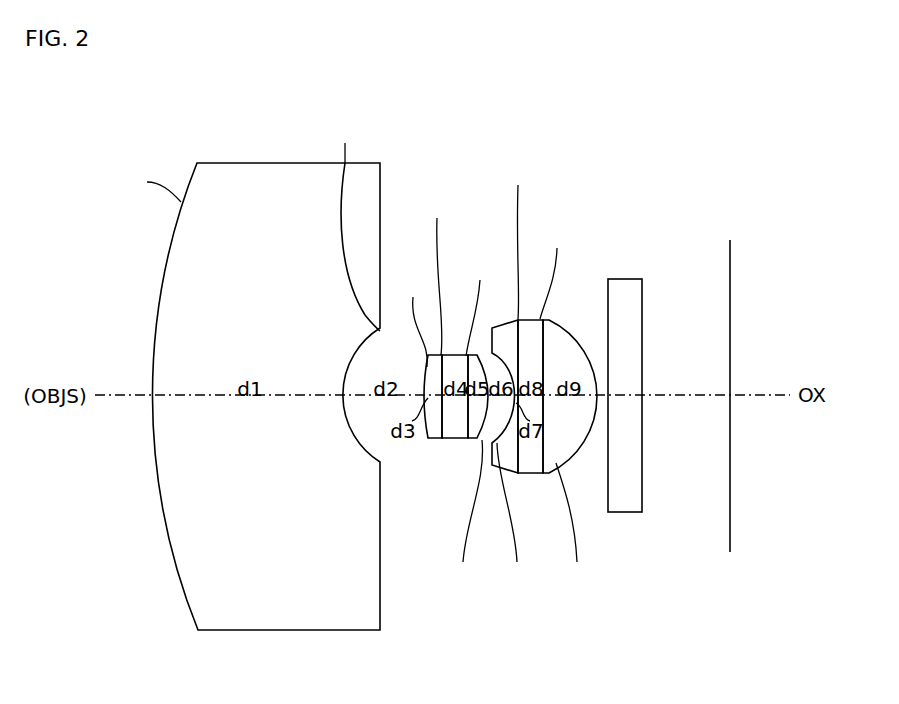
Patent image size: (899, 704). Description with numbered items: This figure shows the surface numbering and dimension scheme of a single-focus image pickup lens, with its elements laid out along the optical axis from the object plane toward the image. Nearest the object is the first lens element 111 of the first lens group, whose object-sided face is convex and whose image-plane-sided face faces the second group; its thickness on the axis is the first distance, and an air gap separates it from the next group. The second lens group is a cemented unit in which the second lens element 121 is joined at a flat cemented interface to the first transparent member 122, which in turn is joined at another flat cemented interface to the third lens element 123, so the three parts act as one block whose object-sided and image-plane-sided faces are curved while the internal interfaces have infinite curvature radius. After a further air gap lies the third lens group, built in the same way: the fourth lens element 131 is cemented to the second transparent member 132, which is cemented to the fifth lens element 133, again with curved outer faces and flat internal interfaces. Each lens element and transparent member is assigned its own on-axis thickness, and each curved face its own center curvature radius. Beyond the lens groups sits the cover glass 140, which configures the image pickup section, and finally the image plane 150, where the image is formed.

The first lens element 111 is at (276, 631).
The second lens element 121 is at (440, 438).
The first transparent member 122 is at (455, 440).
The third lens element 123 is at (478, 440).
The fourth lens element 131 is at (504, 332).
The second transparent member 132 is at (535, 474).
The fifth lens element 133 is at (562, 347).
The cover glass 140 is at (626, 513).
The image plane 150 is at (728, 548).